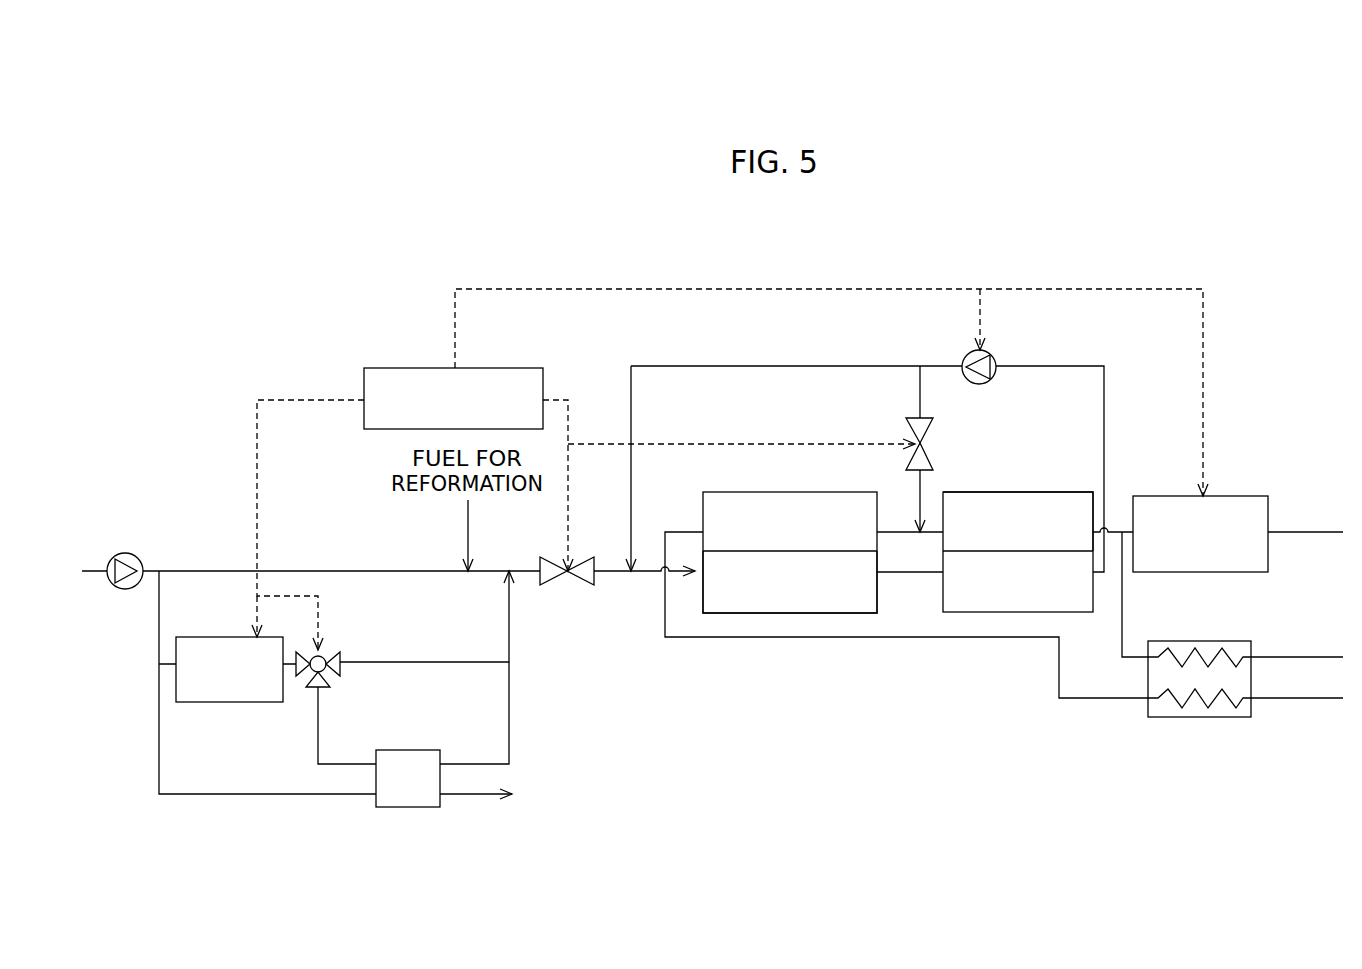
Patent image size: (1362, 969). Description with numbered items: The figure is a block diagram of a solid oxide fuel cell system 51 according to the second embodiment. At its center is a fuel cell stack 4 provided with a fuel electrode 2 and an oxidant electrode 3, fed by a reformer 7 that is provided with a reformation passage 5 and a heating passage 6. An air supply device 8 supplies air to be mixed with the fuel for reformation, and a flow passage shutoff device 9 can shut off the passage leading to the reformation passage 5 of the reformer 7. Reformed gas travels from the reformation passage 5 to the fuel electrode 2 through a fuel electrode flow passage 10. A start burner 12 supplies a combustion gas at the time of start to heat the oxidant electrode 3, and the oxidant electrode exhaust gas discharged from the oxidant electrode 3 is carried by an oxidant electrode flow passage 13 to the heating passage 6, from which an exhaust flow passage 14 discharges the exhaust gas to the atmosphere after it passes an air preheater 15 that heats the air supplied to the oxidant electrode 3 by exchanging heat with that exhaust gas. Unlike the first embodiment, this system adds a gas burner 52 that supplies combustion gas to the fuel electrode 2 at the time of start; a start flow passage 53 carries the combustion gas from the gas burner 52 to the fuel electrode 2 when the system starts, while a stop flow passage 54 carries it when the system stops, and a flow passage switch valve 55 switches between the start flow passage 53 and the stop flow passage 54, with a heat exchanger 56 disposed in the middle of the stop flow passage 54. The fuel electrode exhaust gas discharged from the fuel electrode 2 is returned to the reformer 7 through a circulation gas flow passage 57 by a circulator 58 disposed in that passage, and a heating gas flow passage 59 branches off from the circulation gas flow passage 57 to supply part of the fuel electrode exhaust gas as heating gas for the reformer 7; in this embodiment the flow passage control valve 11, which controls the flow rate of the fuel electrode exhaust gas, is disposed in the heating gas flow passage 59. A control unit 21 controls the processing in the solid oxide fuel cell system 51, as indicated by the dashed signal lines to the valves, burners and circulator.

The fuel electrode 2 is at (1083, 612).
The oxidant electrode 3 is at (1058, 490).
The fuel cell stack 4 is at (1023, 488).
The reformation passage 5 is at (765, 613).
The heating passage 6 is at (702, 522).
The reformer 7 is at (736, 490).
The air supply device 8 is at (124, 553).
The flow passage shutoff device 9 is at (570, 575).
The fuel electrode flow passage 10 is at (928, 573).
The flow passage control valve 11 is at (933, 430).
The start burner 12 is at (1225, 496).
The oxidant electrode flow passage 13 is at (907, 534).
The exhaust flow passage 14 is at (735, 637).
The air preheater 15 is at (1205, 717).
The control unit 21 is at (438, 367).
The solid oxide fuel cell system 51 is at (950, 242).
The gas burner 52 is at (227, 702).
The start flow passage 53 is at (490, 662).
The stop flow passage 54 is at (509, 764).
The flow passage switch valve 55 is at (333, 650).
The heat exchanger 56 is at (396, 807).
The circulation gas flow passage 57 is at (631, 398).
The circulator 58 is at (1000, 355).
The heating gas flow passage 59 is at (920, 386).